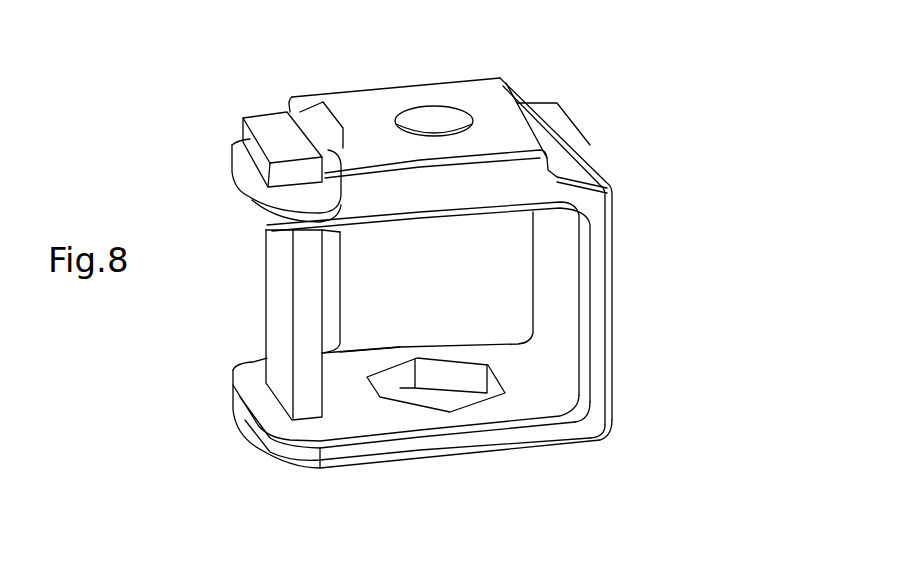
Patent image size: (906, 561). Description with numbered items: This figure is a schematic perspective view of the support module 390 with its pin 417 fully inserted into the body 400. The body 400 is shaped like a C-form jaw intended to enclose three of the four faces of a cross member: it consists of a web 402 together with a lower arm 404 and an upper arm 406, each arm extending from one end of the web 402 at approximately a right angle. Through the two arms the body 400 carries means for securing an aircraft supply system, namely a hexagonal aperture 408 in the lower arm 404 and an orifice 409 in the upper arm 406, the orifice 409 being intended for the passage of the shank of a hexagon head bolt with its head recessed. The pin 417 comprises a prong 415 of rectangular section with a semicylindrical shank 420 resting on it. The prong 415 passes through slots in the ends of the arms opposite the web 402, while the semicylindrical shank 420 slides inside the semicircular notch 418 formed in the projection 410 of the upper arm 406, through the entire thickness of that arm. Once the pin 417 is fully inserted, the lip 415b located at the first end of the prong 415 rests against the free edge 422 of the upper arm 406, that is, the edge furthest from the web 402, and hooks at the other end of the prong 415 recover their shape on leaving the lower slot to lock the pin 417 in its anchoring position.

The support module 390 is at (268, 73).
The body 400 is at (663, 248).
The web 402 is at (600, 375).
The lower arm 404 is at (500, 441).
The upper arm 406 is at (558, 140).
The hexagonal aperture 408 is at (436, 367).
The orifice 409 is at (432, 130).
The projection 410 is at (362, 96).
The prong 415 is at (266, 301).
The lip 415b is at (247, 165).
The pin 417 is at (234, 333).
The semicircular notch 418 is at (327, 127).
The semicylindrical shank 420 is at (337, 300).
The free edge 422 is at (258, 172).